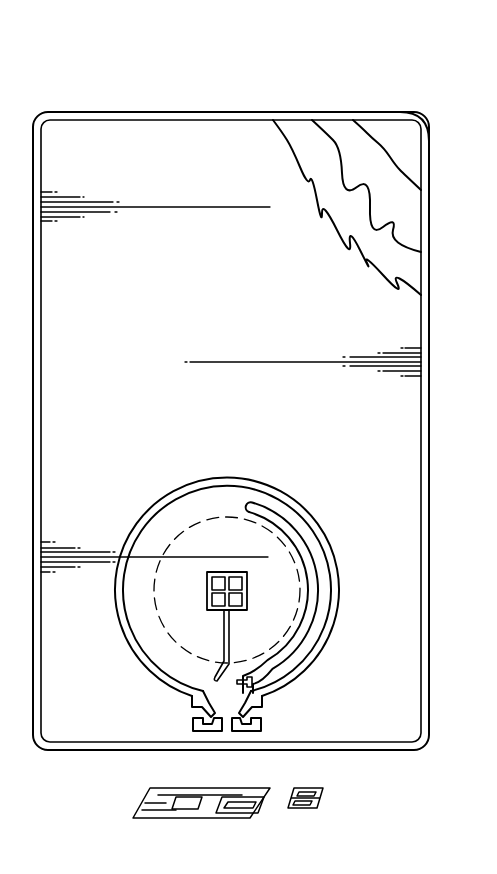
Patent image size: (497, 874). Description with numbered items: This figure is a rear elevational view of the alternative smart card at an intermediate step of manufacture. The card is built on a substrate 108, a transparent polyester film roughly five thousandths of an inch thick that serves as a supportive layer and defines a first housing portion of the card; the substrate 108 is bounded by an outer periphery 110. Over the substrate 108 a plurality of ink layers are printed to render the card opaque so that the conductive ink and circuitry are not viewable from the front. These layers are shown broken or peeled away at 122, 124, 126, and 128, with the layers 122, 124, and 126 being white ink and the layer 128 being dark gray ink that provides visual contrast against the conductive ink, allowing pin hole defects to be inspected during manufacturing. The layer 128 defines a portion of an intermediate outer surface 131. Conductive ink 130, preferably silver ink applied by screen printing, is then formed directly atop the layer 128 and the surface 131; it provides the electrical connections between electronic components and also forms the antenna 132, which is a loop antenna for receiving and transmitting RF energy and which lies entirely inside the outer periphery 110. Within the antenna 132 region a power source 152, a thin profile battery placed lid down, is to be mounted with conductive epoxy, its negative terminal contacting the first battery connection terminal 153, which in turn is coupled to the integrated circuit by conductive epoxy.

The substrate 108 is at (125, 110).
The outer periphery 110 is at (156, 104).
The ink layer 122 is at (429, 153).
The ink layer 124 is at (380, 140).
The ink layer 126 is at (333, 140).
The ink layer 128 is at (290, 140).
The conductive ink 130 is at (256, 565).
The intermediate outer surface 131 is at (238, 323).
The antenna 132 is at (306, 513).
The power source 152 is at (197, 522).
The first battery connection terminal 153 is at (247, 600).